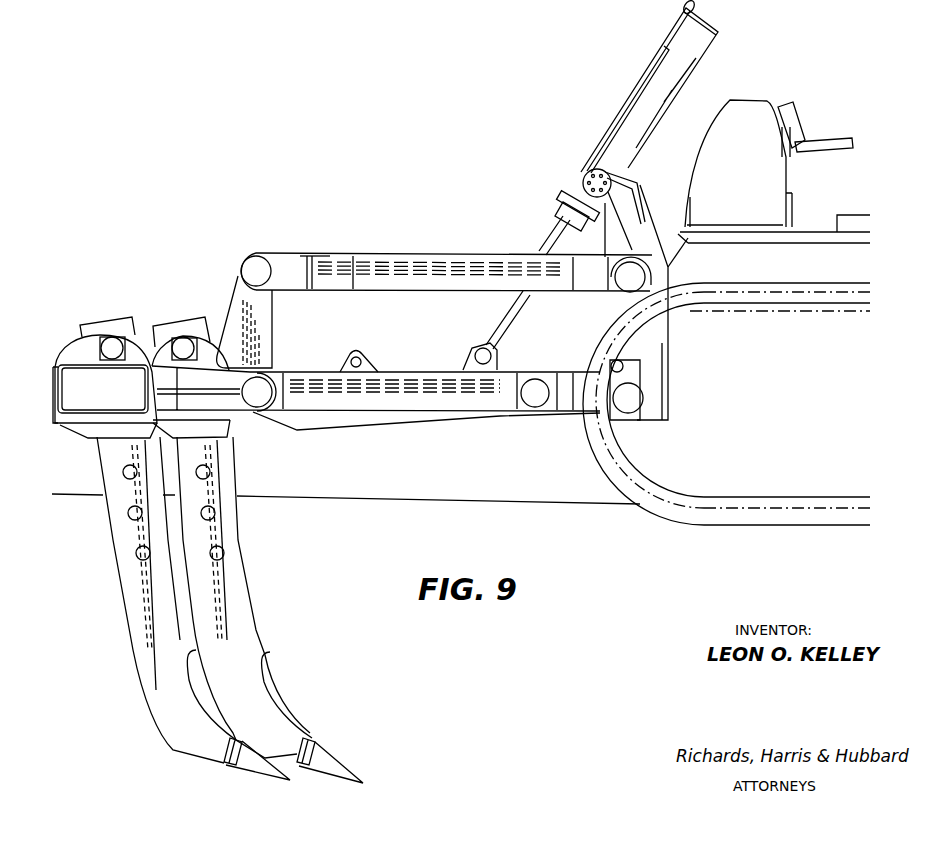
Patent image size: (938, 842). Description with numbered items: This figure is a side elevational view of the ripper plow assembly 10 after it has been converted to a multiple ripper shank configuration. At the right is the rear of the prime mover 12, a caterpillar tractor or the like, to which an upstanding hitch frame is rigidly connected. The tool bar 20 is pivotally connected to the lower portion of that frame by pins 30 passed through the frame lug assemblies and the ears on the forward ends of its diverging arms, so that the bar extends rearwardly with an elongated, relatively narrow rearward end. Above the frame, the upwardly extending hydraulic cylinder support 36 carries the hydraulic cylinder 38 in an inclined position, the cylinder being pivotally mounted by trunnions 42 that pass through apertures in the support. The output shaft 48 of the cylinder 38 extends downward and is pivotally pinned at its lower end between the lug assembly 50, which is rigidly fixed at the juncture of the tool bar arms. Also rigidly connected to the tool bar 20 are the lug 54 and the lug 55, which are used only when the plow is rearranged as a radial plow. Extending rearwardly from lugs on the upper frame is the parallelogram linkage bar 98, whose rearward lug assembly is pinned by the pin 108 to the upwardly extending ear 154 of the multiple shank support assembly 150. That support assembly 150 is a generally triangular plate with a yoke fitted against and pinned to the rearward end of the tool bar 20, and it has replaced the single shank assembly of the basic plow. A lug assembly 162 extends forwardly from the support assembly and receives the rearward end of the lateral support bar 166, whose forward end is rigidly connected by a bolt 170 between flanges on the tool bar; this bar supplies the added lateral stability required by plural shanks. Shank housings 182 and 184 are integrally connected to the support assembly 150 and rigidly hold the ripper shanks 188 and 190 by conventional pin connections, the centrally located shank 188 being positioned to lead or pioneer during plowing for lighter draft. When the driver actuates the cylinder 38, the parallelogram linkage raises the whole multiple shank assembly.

The ripper plow assembly 10 is at (318, 213).
The prime mover 12 is at (832, 113).
The tool bar 20 is at (330, 428).
The pins 30 is at (645, 400).
The hydraulic cylinder support 36 is at (653, 232).
The hydraulic cylinder 38 is at (661, 60).
The trunnions 42 is at (581, 187).
The output shaft 48 is at (552, 232).
The lug assembly 50 is at (474, 357).
The lug 54 is at (359, 349).
The lug 55 is at (596, 373).
The parallelogram linkage bar 98 is at (434, 252).
The pin 108 is at (263, 264).
The multiple shank support assembly 150 is at (53, 378).
The ear 154 is at (273, 310).
The lug assembly 162 is at (263, 376).
The lateral support bar 166 is at (434, 402).
The bolt 170 is at (530, 405).
The shank housing 182 is at (166, 330).
The shank housing 184 is at (94, 335).
The ripper shank 188 is at (248, 607).
The ripper shank 190 is at (135, 605).